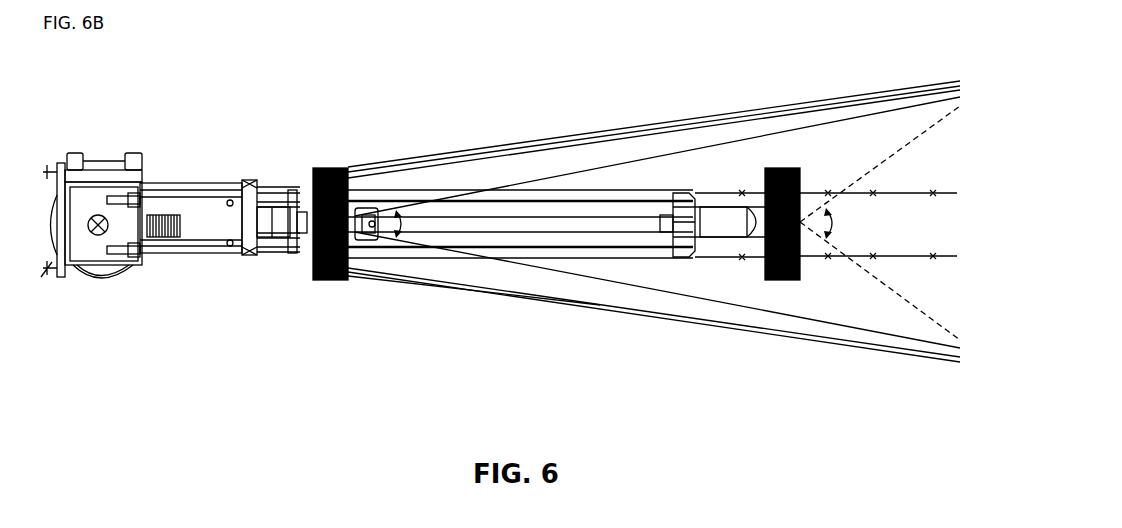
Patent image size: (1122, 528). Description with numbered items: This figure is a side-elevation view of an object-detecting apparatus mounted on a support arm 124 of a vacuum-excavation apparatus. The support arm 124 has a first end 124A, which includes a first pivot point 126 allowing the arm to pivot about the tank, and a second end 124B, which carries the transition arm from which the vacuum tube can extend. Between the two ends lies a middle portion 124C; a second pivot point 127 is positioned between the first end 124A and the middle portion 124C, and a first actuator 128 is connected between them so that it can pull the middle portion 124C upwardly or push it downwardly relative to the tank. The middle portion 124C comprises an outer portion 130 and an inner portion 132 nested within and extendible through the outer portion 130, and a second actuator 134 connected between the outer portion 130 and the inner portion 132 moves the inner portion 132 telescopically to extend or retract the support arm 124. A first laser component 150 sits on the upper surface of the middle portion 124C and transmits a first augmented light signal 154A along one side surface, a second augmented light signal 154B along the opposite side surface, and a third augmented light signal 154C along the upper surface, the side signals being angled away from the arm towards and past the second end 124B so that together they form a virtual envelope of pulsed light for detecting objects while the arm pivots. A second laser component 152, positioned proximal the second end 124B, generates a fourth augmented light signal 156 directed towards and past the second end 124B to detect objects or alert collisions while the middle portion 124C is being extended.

The support arm 124 is at (462, 118).
The first end 124A is at (149, 160).
The second end 124B is at (879, 150).
The middle portion 124C is at (556, 270).
The first pivot point 126 is at (122, 278).
The second pivot point 127 is at (252, 180).
The first actuator 128 is at (197, 194).
The outer portion 130 is at (610, 258).
The inner portion 132 is at (706, 257).
The second actuator 134 is at (594, 216).
The first laser component 150 is at (346, 168).
The second laser component 152 is at (790, 167).
The first augmented light signal 154A is at (512, 136).
The second augmented light signal 154B is at (455, 300).
The third augmented light signal 154C is at (677, 142).
The fourth augmented light signal 156 is at (869, 287).